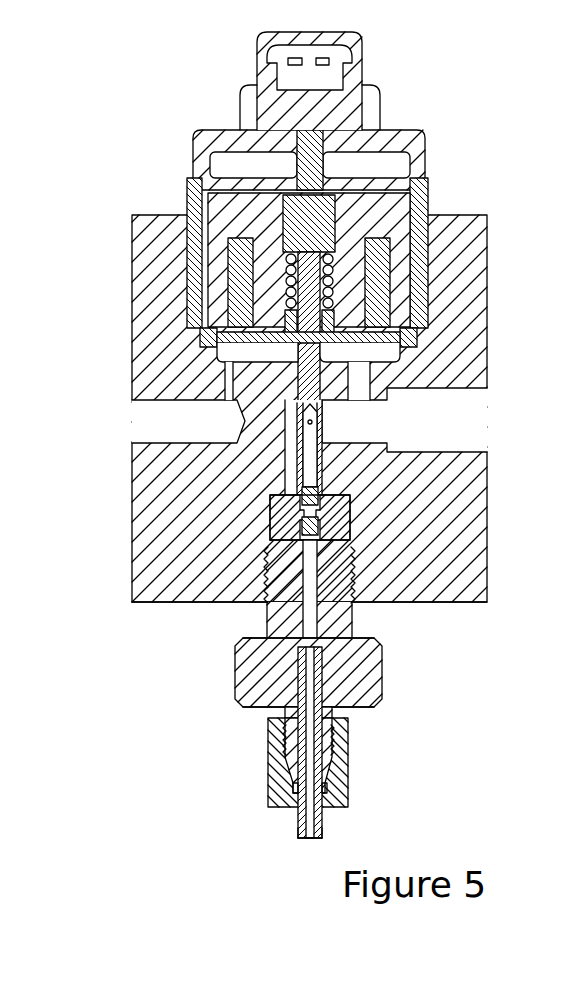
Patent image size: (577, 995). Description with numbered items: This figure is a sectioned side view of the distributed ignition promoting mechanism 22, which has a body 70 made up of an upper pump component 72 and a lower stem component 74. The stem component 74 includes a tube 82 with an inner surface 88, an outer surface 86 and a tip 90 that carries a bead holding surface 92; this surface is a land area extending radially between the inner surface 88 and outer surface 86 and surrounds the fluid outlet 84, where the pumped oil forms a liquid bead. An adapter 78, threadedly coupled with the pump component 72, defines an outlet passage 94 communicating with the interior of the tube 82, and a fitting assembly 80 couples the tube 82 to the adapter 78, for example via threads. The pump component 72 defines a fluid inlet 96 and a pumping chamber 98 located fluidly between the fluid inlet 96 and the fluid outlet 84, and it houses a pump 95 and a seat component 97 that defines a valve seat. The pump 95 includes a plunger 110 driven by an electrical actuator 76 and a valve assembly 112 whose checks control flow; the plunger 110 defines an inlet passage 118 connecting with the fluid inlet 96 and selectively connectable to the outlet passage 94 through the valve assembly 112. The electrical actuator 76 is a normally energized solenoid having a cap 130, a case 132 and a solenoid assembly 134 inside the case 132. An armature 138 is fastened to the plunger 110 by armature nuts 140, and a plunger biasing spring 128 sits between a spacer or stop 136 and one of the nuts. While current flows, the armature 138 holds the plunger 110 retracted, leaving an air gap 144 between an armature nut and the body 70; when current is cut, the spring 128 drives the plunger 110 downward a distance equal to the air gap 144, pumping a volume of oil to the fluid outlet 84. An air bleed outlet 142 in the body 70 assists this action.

The distributed ignition promoting mechanism 22 is at (452, 137).
The cap 130 is at (355, 46).
The case 132 is at (200, 150).
The solenoid assembly 134 is at (230, 196).
The spacer or stop 136 is at (320, 188).
The plunger biasing spring 128 is at (333, 257).
The body 70 is at (485, 258).
The pump component 72 is at (485, 306).
The electrical actuator 76 is at (188, 297).
The armature 138 is at (200, 340).
The armature nuts 140 is at (230, 352).
The air gap 144 is at (362, 358).
The plunger 110 is at (312, 380).
The fluid inlet 96 is at (487, 390).
The air bleed outlet 142 is at (132, 434).
The inlet passage 118 is at (298, 455).
The pump 95 is at (332, 483).
The valve assembly 112 is at (332, 503).
The pumping chamber 98 is at (300, 508).
The seat component 97 is at (338, 530).
The outlet passage 94 is at (332, 600).
The adapter 78 is at (235, 660).
The stem component 74 is at (383, 660).
The tube 82 is at (333, 712).
The fitting assembly 80 is at (268, 760).
The inner surface 88 is at (298, 812).
The outer surface 86 is at (326, 818).
The bead holding surface 92 is at (320, 836).
The tip 90 is at (290, 840).
The fluid outlet 84 is at (309, 840).